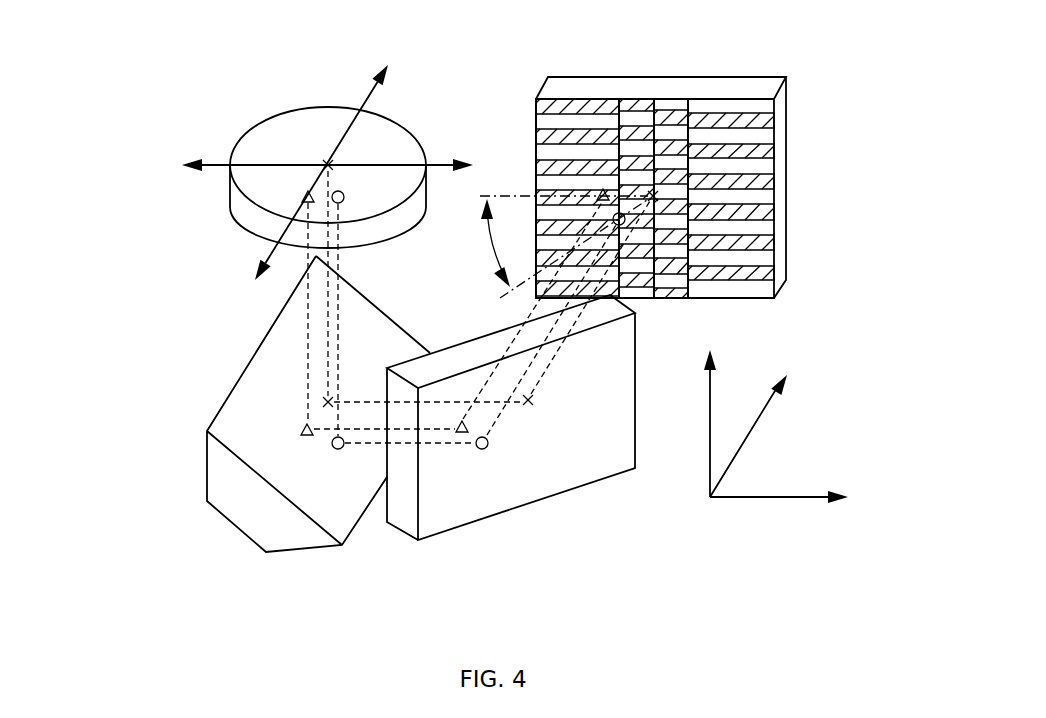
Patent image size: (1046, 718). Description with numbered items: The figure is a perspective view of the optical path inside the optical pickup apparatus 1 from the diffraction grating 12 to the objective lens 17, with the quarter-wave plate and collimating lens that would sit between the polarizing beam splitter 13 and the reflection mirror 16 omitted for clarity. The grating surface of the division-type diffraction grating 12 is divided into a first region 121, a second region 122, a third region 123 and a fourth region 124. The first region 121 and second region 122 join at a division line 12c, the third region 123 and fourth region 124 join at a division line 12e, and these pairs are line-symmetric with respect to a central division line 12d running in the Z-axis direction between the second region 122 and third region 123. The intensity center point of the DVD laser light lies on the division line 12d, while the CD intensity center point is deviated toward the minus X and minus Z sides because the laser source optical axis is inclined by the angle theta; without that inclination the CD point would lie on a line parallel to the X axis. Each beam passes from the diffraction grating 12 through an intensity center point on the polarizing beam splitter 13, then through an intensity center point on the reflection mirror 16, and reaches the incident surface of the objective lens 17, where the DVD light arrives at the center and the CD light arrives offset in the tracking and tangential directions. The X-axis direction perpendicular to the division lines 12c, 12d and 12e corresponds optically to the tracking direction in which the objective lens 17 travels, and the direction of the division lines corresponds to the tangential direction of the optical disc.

The optical pickup apparatus 1 is at (602, 537).
The diffraction grating 12 is at (787, 162).
The division line 12c is at (630, 97).
The division line 12d is at (668, 97).
The division line 12e is at (676, 96).
The first region 121 is at (577, 100).
The second region 122 is at (634, 100).
The third region 123 is at (673, 100).
The fourth region 124 is at (737, 100).
The polarizing beam splitter 13 is at (507, 510).
The reflection mirror 16 is at (300, 553).
The objective lens 17 is at (230, 186).